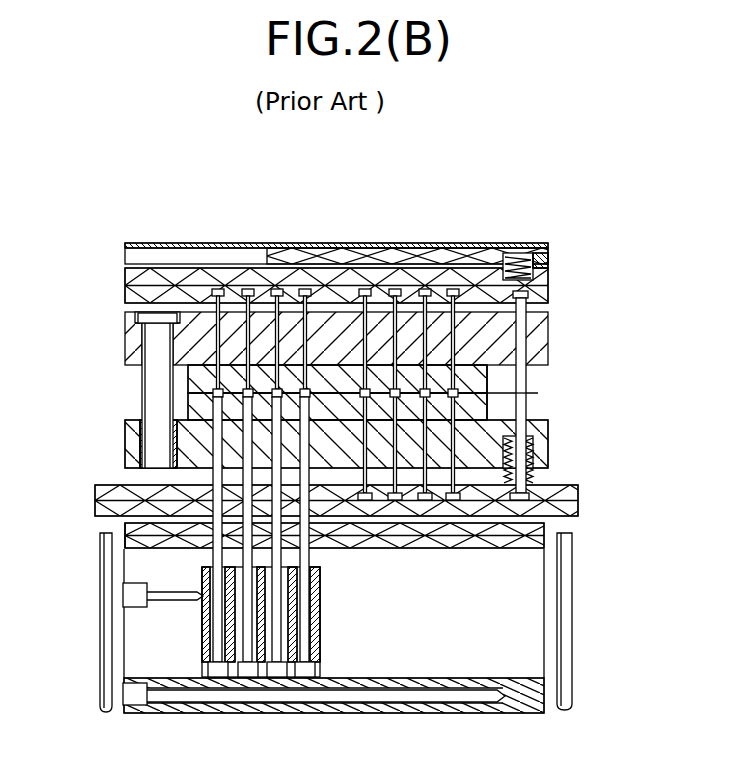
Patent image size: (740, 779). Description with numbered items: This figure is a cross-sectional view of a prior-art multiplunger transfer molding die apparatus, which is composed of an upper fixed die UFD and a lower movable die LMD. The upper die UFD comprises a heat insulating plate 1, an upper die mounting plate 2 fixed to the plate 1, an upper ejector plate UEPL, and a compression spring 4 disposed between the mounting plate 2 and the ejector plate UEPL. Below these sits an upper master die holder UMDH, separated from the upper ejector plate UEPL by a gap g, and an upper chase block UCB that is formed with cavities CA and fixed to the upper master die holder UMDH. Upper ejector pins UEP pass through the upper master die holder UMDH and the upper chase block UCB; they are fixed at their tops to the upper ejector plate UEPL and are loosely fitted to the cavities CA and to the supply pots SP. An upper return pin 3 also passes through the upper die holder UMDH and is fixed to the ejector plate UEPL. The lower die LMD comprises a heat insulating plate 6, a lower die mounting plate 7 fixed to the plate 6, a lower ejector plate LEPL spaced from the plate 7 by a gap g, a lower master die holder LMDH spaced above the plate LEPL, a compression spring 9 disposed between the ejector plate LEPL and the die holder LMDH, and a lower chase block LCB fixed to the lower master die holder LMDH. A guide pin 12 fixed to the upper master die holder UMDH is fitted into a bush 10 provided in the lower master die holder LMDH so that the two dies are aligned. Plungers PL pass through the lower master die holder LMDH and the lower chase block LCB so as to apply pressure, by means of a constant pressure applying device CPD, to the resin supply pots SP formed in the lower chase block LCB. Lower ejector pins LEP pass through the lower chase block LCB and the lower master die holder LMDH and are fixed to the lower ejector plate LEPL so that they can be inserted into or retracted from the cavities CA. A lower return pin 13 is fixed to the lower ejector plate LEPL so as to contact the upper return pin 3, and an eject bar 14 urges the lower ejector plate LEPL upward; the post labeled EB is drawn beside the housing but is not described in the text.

The heat insulating plate 1 is at (433, 243).
The upper die mounting plate 2 is at (549, 263).
The upper return pin 3 is at (524, 377).
The compression spring 4 is at (515, 255).
The heat insulating plate 6 is at (125, 557).
The lower die mounting plate 7 is at (125, 527).
The compression spring 9 is at (547, 453).
The bush 10 is at (140, 444).
The guide pin 12 is at (150, 383).
The lower return pin 13 is at (522, 478).
The eject bar 14 is at (563, 623).
The gap g is at (547, 309).
The upper fixed die UFD is at (116, 332).
The supply pots SP is at (177, 396).
The lower chase block LCB is at (188, 412).
The lower movable die LMD is at (114, 439).
The upper ejector plate UEPL is at (548, 297).
The upper ejector pins UEP is at (547, 331).
The upper master die holder UMDH is at (543, 352).
The cavities CA is at (528, 392).
The upper chase block UCB is at (478, 382).
The lower master die holder LMDH is at (548, 430).
The lower ejector plate LEPL is at (578, 494).
The lower ejector pins LEP is at (546, 523).
The plungers PL is at (124, 580).
The ejector bar EB is at (100, 630).
The constant pressure applying device CPD is at (200, 657).